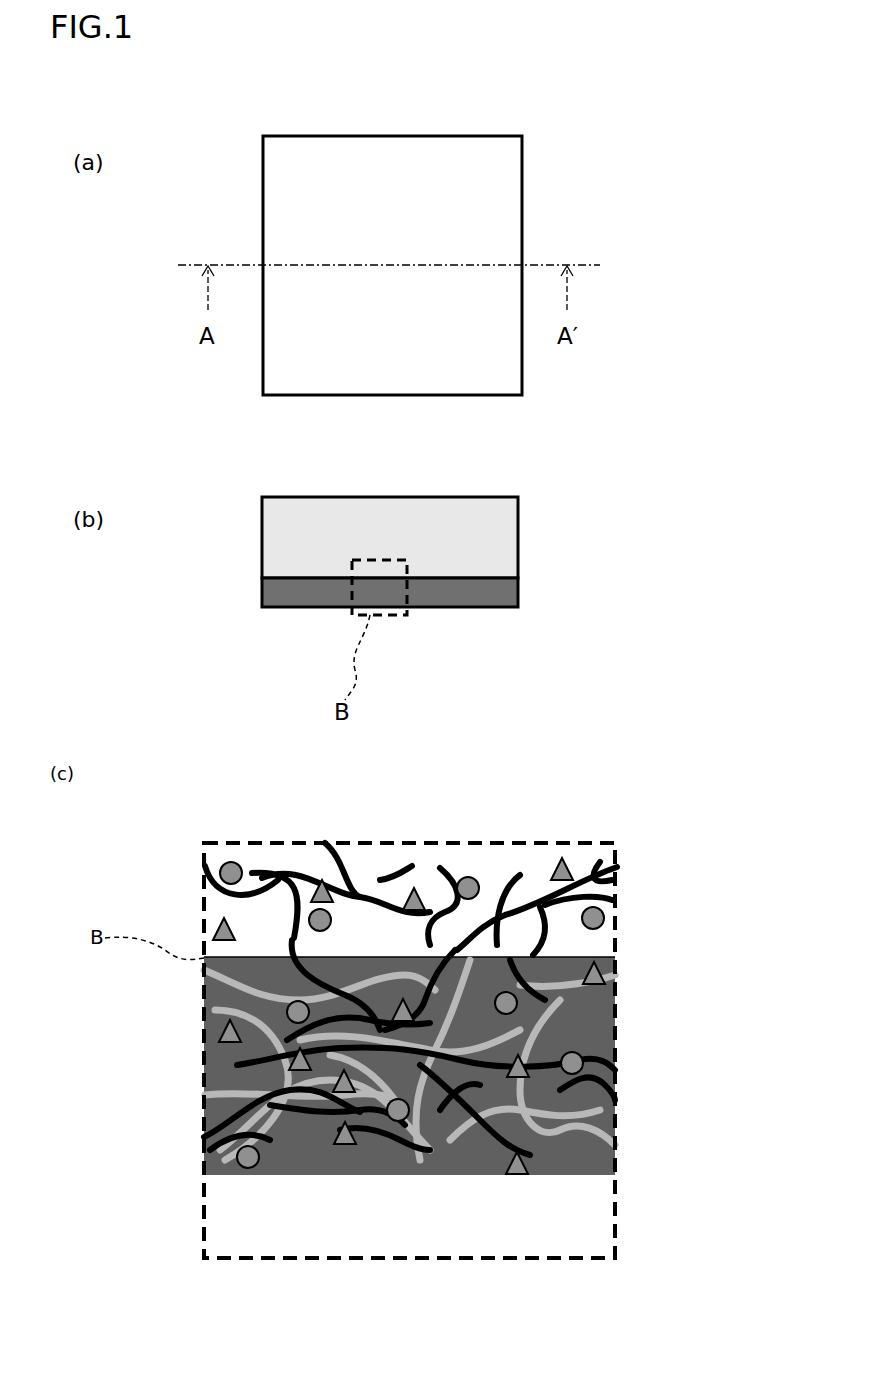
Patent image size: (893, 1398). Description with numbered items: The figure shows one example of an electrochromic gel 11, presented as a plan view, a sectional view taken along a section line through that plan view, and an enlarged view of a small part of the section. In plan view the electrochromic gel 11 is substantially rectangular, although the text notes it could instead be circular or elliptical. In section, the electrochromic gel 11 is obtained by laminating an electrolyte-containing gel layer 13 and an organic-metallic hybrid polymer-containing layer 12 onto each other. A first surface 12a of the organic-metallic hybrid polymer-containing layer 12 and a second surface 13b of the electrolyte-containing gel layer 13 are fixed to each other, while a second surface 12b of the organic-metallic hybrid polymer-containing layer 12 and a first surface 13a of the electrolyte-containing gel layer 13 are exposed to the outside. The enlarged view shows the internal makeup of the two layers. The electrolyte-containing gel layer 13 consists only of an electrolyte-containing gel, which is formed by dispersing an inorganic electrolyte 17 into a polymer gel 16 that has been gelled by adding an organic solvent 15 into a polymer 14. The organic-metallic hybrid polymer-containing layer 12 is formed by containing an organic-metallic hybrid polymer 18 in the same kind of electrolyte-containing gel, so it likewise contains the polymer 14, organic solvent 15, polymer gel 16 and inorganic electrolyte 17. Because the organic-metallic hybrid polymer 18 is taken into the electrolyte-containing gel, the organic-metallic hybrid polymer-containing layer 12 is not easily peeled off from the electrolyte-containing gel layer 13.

The electrochromic gel 11 is at (614, 163).
The organic-metallic hybrid polymer-containing layer 12 is at (508, 597).
The first surface of the organic-metallic hybrid polymer-containing layer 12a is at (330, 577).
The second surface of the organic-metallic hybrid polymer-containing layer 12b is at (322, 607).
The electrolyte-containing gel layer 13 is at (510, 240).
The first surface of the electrolyte-containing gel layer 13a is at (457, 497).
The second surface of the electrolyte-containing gel layer 13b is at (262, 600).
The polymer 14 is at (616, 900).
The organic solvent 15 is at (618, 878).
The polymer gel 16 is at (683, 848).
The inorganic electrolyte 17 is at (604, 920).
The organic-metallic hybrid polymer 18 is at (612, 990).